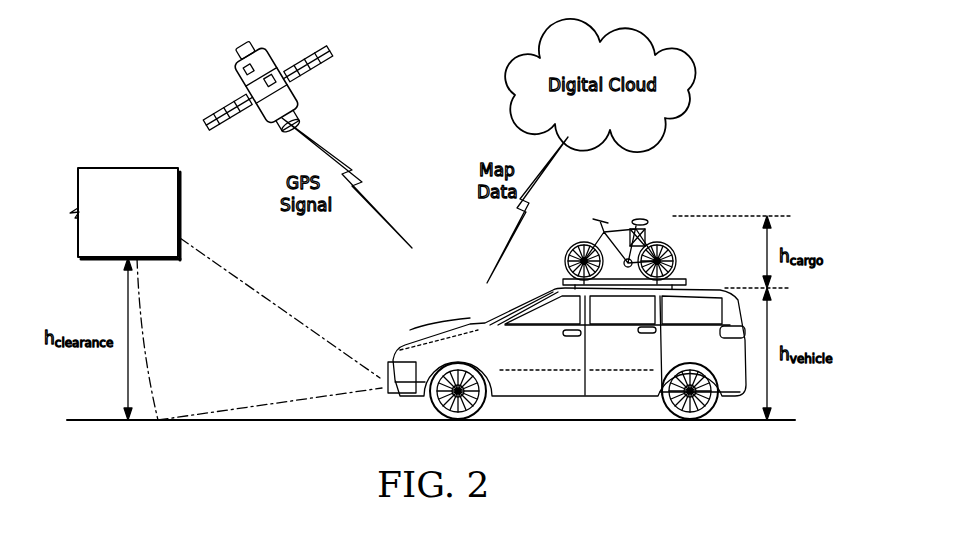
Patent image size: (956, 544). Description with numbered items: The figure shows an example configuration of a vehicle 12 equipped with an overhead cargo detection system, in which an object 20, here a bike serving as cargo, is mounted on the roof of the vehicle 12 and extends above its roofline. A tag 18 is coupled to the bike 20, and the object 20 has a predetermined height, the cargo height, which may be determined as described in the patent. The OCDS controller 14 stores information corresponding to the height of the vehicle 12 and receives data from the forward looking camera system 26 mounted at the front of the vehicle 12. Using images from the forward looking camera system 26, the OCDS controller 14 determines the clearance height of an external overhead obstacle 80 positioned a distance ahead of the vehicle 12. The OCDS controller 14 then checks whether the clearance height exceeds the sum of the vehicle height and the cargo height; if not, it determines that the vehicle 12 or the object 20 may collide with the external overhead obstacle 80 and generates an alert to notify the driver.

The vehicle 12 is at (569, 349).
The OCDS controller 14 is at (548, 359).
The tag 18 is at (648, 238).
The object 20 is at (622, 228).
The forward looking camera system 26 is at (388, 366).
The external overhead obstacle 80 is at (131, 168).